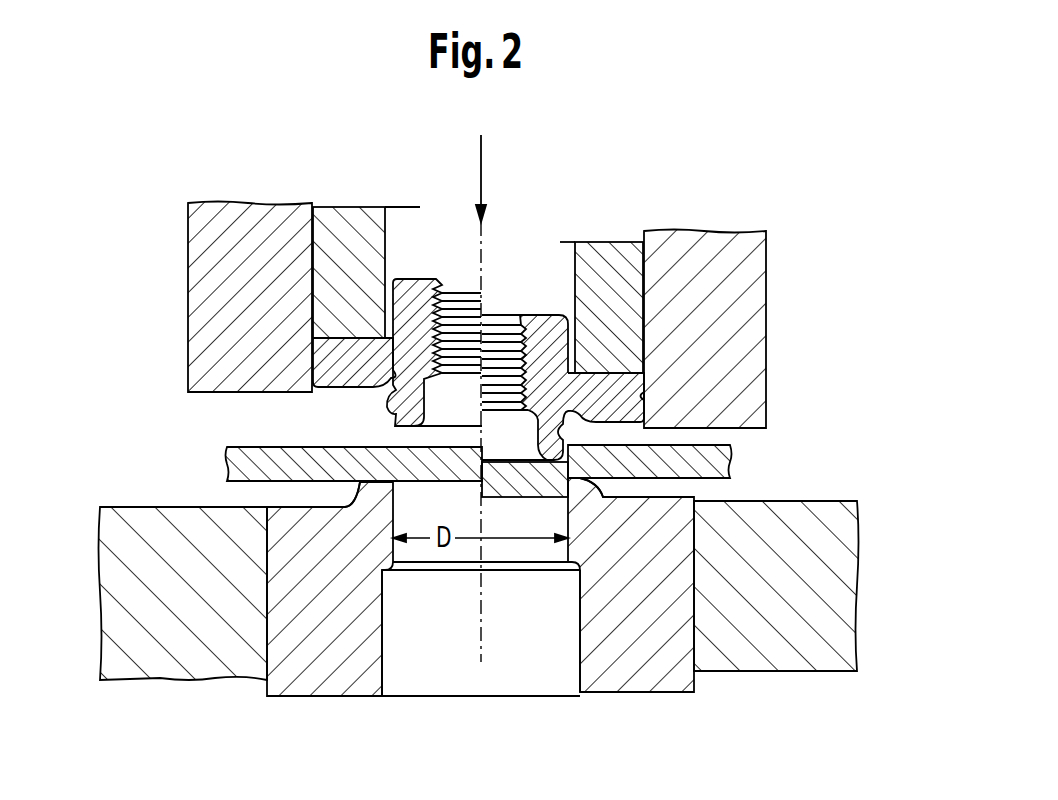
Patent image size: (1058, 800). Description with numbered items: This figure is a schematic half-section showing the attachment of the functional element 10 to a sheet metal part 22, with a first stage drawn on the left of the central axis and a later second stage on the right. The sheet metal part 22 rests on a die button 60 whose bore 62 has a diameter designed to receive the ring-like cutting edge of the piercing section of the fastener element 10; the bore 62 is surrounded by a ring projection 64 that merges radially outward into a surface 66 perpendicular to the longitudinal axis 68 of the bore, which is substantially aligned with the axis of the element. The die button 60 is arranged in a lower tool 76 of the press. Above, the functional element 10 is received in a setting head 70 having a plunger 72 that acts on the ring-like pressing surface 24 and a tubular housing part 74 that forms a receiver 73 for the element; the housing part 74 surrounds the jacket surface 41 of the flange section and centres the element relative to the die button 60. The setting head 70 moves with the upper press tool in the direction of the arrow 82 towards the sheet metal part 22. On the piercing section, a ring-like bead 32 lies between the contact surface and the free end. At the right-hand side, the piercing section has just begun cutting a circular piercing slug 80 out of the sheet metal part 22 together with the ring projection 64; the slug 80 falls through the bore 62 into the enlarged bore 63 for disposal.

The functional element 10 is at (529, 312).
The sheet metal part 22 is at (255, 447).
The ring-like pressing surface 24 is at (343, 338).
The ring-like bead 32 is at (392, 403).
The jacket surface 41 is at (650, 387).
The die button 60 is at (698, 616).
The bore 62 is at (396, 502).
The enlarged bore 63 is at (384, 668).
The ring projection 64 is at (360, 483).
The surface 66 is at (648, 497).
The longitudinal axis of the bore 68 is at (484, 630).
The setting head 70 is at (700, 298).
The plunger 72 is at (603, 245).
The receiver 73 is at (317, 392).
The tubular housing part 74 is at (748, 333).
The lower tool 76 is at (826, 652).
The piercing slug 80 is at (510, 480).
The arrow 82 is at (481, 160).